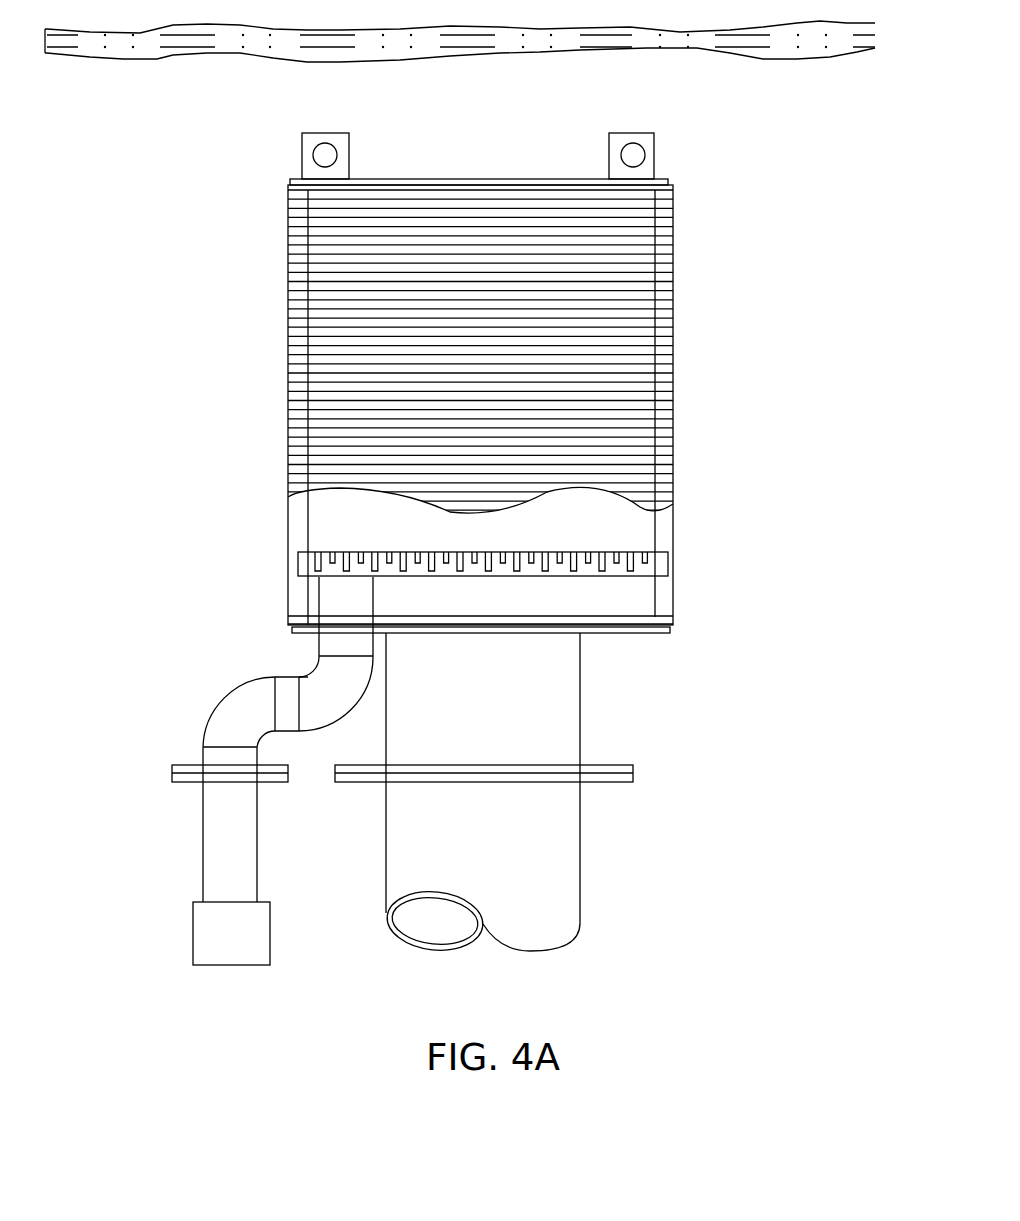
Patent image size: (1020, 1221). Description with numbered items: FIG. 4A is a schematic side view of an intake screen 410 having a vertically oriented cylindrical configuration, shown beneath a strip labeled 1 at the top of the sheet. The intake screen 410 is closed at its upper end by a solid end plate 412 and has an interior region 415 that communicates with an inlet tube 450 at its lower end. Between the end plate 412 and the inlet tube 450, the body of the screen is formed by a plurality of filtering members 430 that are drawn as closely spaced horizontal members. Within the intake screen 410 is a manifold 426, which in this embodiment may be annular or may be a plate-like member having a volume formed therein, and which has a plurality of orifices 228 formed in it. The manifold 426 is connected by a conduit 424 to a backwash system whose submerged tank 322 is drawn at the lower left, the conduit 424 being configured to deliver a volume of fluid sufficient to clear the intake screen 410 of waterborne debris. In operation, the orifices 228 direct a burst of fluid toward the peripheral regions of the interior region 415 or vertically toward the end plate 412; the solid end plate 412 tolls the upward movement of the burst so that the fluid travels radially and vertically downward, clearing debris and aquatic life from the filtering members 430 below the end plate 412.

The web / strip material 1 is at (823, 62).
The intake screen 410 is at (721, 290).
The solid end plate 412 is at (525, 178).
The plurality of filtering members 430 is at (673, 355).
The interior region 415 is at (572, 531).
The manifold 426 is at (677, 557).
The plurality of orifices 228 is at (644, 564).
The conduit 424 is at (308, 672).
The inlet tube 450 is at (500, 721).
The tank 322 is at (252, 944).